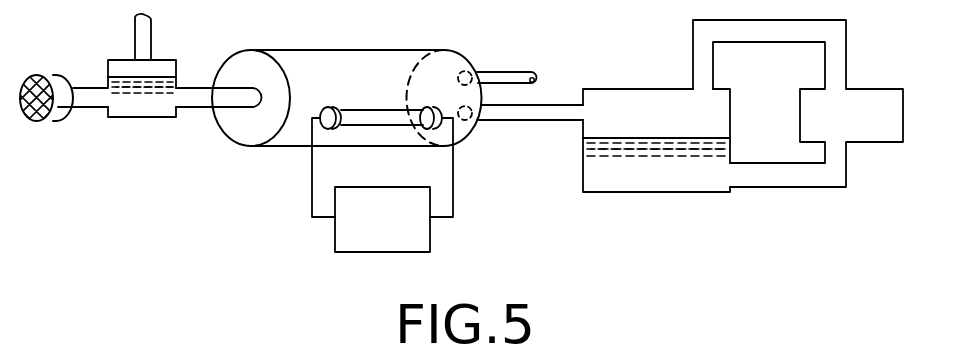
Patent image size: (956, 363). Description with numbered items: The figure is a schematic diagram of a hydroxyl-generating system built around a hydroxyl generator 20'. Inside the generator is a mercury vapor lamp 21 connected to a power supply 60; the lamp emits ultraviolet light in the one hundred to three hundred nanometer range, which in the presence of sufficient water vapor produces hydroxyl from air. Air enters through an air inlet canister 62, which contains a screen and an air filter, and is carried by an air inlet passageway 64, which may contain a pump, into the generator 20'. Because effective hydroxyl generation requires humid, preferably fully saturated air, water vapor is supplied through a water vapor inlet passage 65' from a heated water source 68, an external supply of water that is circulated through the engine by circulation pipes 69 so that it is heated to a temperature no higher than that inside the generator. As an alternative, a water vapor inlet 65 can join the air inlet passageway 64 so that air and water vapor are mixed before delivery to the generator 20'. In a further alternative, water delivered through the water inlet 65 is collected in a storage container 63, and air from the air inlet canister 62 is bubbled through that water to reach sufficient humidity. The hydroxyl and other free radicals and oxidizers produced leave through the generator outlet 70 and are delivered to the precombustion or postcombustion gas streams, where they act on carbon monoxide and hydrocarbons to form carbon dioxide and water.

The air inlet canister 62 is at (40, 121).
The storage container 63 is at (107, 65).
The water vapor inlet 65 is at (115, 32).
The air inlet passageway 64 is at (196, 88).
The hydroxyl generator 20' is at (347, 79).
The mercury vapor lamp 21 is at (377, 110).
The power supply 60 is at (370, 187).
The generator outlet 70 is at (502, 72).
The water vapor inlet passage 65' is at (530, 135).
The heated water source 68 is at (642, 192).
The circulation pipes 69 is at (785, 187).